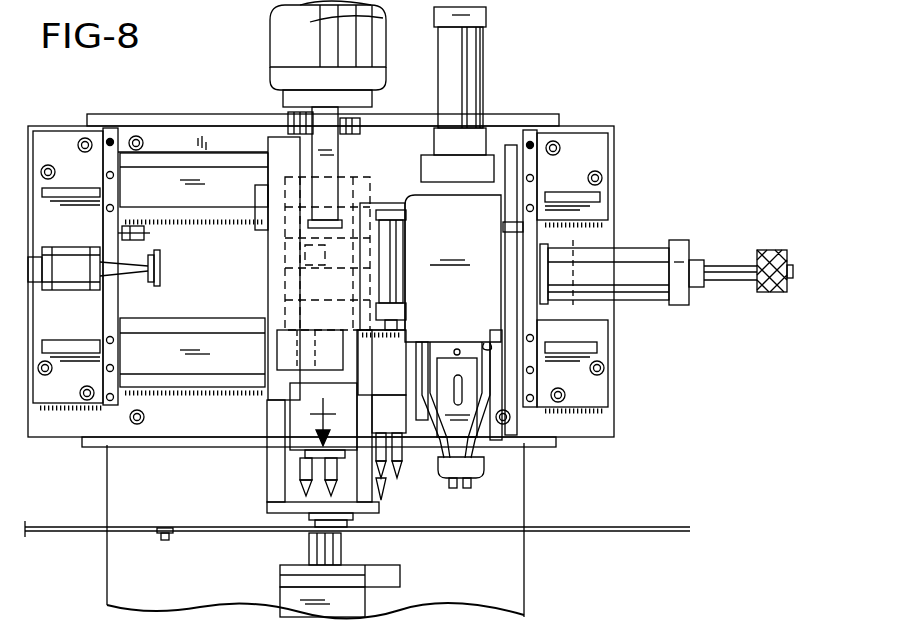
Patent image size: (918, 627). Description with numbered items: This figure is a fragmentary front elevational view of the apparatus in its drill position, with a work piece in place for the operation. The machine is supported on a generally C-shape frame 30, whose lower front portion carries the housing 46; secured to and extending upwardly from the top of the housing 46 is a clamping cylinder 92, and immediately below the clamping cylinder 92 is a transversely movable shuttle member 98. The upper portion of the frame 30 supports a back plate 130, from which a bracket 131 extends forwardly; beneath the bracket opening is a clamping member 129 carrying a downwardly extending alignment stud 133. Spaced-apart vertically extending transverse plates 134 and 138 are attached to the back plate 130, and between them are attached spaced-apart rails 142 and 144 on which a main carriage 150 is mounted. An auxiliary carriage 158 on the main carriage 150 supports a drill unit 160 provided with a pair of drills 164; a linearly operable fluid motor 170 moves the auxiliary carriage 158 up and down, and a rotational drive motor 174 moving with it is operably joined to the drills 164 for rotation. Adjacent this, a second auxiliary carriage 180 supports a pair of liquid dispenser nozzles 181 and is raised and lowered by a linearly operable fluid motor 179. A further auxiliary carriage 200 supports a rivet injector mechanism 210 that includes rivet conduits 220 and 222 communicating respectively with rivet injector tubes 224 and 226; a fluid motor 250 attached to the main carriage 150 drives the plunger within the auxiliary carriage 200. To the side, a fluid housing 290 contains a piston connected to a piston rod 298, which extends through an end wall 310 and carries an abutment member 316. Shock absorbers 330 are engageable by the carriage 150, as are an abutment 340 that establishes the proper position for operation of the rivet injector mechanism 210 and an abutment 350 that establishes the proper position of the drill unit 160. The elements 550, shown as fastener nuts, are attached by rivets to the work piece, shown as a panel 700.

The frame 30 is at (107, 590).
The housing 46 is at (285, 600).
The clamping cylinder 92 is at (341, 557).
The shuttle member 98 is at (400, 575).
The clamping member 129 is at (292, 518).
The back plate 130 is at (238, 132).
The bracket 131 is at (267, 508).
The alignment stud 133 is at (315, 536).
The transverse plate 134 is at (110, 142).
The transverse plate 138 is at (531, 146).
The rail 142 is at (165, 197).
The rail 144 is at (165, 364).
The main carriage 150 is at (398, 145).
The auxiliary carriage 158 is at (283, 195).
The drill unit 160 is at (290, 415).
The drills 164 is at (306, 488).
The linearly operable fluid motor 170 is at (285, 320).
The rotational drive motor 174 is at (273, 37).
The linearly operable fluid motor 179 is at (400, 262).
The auxiliary carriage 180 is at (398, 468).
The liquid dispenser nozzles 181 is at (384, 496).
The auxiliary carriage 200 is at (478, 217).
The rivet injector mechanism 210 is at (505, 466).
The rivet conduit 220 is at (422, 345).
The rivet conduit 222 is at (484, 343).
The rivet injector tube 224 is at (455, 488).
The rivet injector tube 226 is at (470, 486).
The fluid motor 250 is at (485, 48).
The fluid housing 290 is at (640, 243).
The piston rod 298 is at (728, 265).
The end wall 310 is at (683, 240).
The abutment member 316 is at (772, 250).
The shock absorbers 330 is at (160, 268).
The abutment 340 is at (145, 232).
The abutment 350 is at (503, 227).
The elements 550 is at (165, 540).
The panel 700 is at (637, 527).